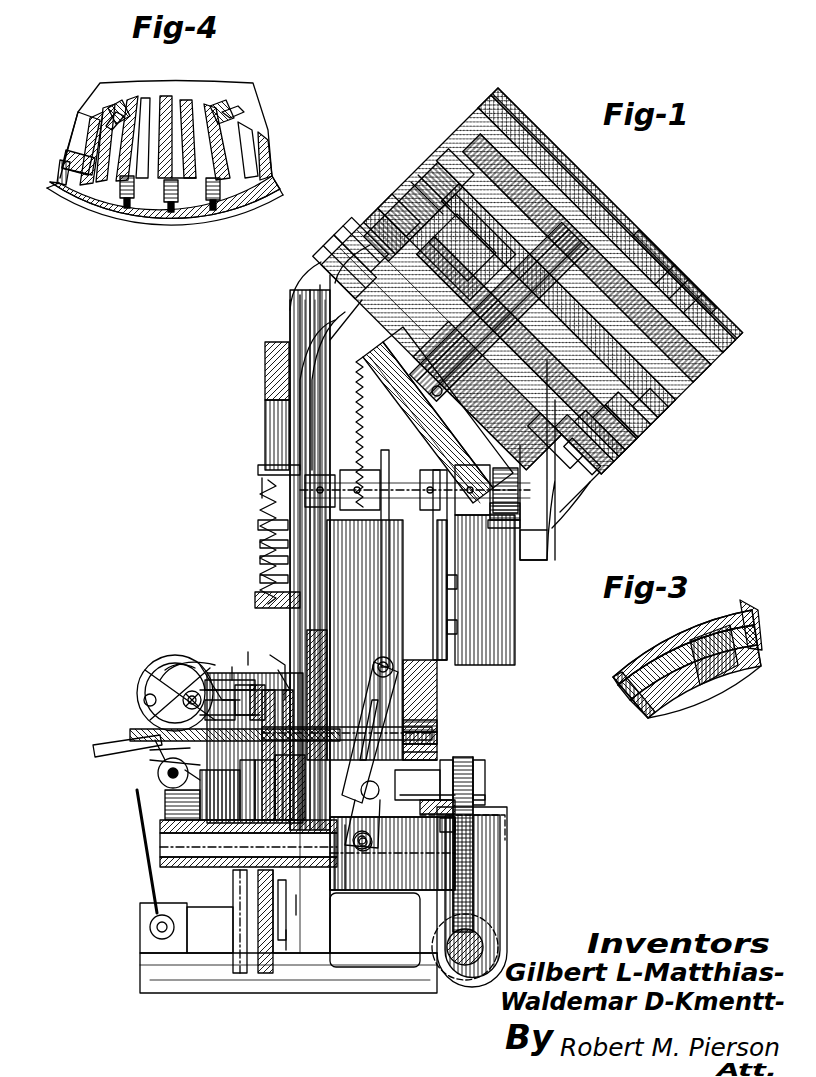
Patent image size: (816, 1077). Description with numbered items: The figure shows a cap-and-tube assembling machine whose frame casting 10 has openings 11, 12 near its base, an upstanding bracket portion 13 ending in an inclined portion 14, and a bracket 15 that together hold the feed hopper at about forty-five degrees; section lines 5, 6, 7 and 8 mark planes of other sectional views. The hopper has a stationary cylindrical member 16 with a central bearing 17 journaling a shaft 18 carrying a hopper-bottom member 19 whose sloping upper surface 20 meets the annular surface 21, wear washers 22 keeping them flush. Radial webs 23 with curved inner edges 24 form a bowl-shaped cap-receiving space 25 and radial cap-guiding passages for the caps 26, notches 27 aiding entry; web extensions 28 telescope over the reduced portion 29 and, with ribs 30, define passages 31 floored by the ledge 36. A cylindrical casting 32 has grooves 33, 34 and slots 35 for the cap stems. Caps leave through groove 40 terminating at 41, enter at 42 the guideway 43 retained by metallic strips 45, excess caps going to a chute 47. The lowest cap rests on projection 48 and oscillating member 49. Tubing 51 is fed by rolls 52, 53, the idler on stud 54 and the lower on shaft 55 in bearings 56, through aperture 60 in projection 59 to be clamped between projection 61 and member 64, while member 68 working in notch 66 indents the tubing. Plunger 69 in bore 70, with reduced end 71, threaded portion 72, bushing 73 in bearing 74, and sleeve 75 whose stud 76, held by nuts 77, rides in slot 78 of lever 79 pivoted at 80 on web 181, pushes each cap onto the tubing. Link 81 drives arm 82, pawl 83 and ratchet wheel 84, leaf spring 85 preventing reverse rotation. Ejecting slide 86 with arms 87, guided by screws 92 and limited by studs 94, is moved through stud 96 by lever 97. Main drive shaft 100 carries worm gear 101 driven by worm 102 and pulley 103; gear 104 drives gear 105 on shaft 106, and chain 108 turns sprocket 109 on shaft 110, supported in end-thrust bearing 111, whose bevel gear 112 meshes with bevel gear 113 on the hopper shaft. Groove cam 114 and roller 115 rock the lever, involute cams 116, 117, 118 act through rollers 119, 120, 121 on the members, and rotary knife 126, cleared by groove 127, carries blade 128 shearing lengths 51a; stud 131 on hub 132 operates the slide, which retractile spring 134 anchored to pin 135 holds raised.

In FIG. 1, the section line 5— 5 is at (238, 667).
In FIG. 1, the section line 6— 6 is at (254, 652).
In FIG. 1, the section line 7— 7 is at (286, 940).
In FIG. 1, the section line 8— 8 is at (296, 904).
In FIG. 1, the frame casting 10 is at (452, 660).
In FIG. 1, the opening 11 is at (297, 955).
In FIG. 1, the opening 12 is at (395, 950).
In FIG. 1, the upstanding bracket portion 13 is at (325, 417).
In FIG. 1, the inclined portion 14 is at (345, 292).
In FIG. 1, the bracket 15 is at (560, 505).
In FIG. 4, the lower stationary cylindrical member 16 is at (68, 125).
In FIG. 3, the lower stationary cylindrical member 16 is at (632, 670).
In FIG. 1, the lower stationary cylindrical member 16 is at (612, 440).
In FIG. 1, the central bearing 17 is at (565, 440).
In FIG. 1, the shaft 18 is at (558, 470).
In FIG. 1, the hopper-bottom member 19 is at (553, 160).
In FIG. 4, the upper surface 20 is at (86, 118).
In FIG. 1, the upper surface 20 is at (505, 195).
In FIG. 4, the upper annular surface 21 is at (60, 150).
In FIG. 1, the upper annular surface 21 is at (478, 178).
In FIG. 1, the wear washers 22 is at (470, 295).
In FIG. 4, the webs 23 is at (172, 212).
In FIG. 1, the webs 23 is at (692, 292).
In FIG. 4, the inner edges 24 is at (162, 115).
In FIG. 1, the inner edges 24 is at (642, 252).
In FIG. 4, the cap-receiving space 25 is at (178, 96).
In FIG. 1, the cap-receiving space 25 is at (608, 205).
In FIG. 4, the caps 26 is at (118, 105).
In FIG. 1, the caps 26 is at (690, 368).
In FIG. 4, the notches 27 is at (210, 110).
In FIG. 3, the web extensions 28 is at (692, 656).
In FIG. 1, the web extensions 28 is at (437, 180).
In FIG. 1, the reduced upper portion 29 is at (430, 195).
In FIG. 4, the ribs 30 is at (84, 198).
In FIG. 3, the ribs 30 is at (734, 614).
In FIG. 1, the ribs 30 is at (453, 170).
In FIG. 3, the passages 31 is at (716, 602).
In FIG. 1, the passages 31 is at (668, 402).
In FIG. 4, the hollow cylindrical casting 32 is at (112, 205).
In FIG. 3, the hollow cylindrical casting 32 is at (660, 690).
In FIG. 1, the hollow cylindrical casting 32 is at (692, 388).
In FIG. 4, the grooves 33 is at (236, 200).
In FIG. 1, the grooves 33 is at (702, 352).
In FIG. 1, the grooves 34 is at (385, 230).
In FIG. 3, the slots 35 is at (712, 655).
In FIG. 4, the shoulder or ledge 36 is at (57, 178).
In FIG. 3, the shoulder or ledge 36 is at (637, 690).
In FIG. 1, the shoulder or ledge 36 is at (640, 420).
In FIG. 1, the cap-guiding groove 40 is at (392, 205).
In FIG. 1, the terminus of groove 41 is at (350, 225).
In FIG. 1, the entrance 42 is at (340, 272).
In FIG. 1, the cap-feeding guideway 43 is at (322, 312).
In FIG. 1, the metallic strips 45 is at (318, 300).
In FIG. 1, the chute 47 is at (275, 355).
In FIG. 1, the cap-supporting projection 48 is at (195, 694).
In FIG. 1, the vertically oscillating member 49 is at (170, 767).
In FIG. 1, the tubing 51 is at (95, 750).
In FIG. 1, the lengths or sleeves 51a is at (210, 665).
In FIG. 1, the upper feed roll 52 is at (190, 680).
In FIG. 1, the lower feed roll 53 is at (175, 772).
In FIG. 1, the stud 54 is at (205, 685).
In FIG. 1, the shaft 55 is at (190, 780).
In FIG. 1, the bearings 56 is at (200, 792).
In FIG. 1, the projection 59 is at (187, 666).
In FIG. 1, the tube-guiding aperture 60 is at (180, 660).
In FIG. 1, the tube-clamping projection 61 is at (240, 690).
In FIG. 1, the tube-supporting member 64 is at (168, 752).
In FIG. 1, the notch 66 is at (150, 735).
In FIG. 1, the tube-clamping member 68 is at (160, 748).
In FIG. 1, the cap-advancing plunger 69 is at (430, 702).
In FIG. 1, the bore 70 is at (432, 712).
In FIG. 1, the reduced end 71 is at (430, 692).
In FIG. 1, the threaded portion 72 is at (440, 759).
In FIG. 1, the threaded bushing 73 is at (440, 747).
In FIG. 1, the bearing 74 is at (440, 729).
In FIG. 1, the sleeve 75 is at (470, 764).
In FIG. 1, the stud 76 is at (430, 737).
In FIG. 1, the nuts 77 is at (473, 782).
In FIG. 1, the slot 78 is at (425, 724).
In FIG. 1, the lever 79 is at (420, 714).
In FIG. 1, the pivot 80 is at (470, 794).
In FIG. 1, the link 81 is at (255, 690).
In FIG. 1, the pawl-operating arm 82 is at (205, 695).
In FIG. 1, the pawl 83 is at (210, 710).
In FIG. 1, the ratchet wheel 84 is at (200, 720).
In FIG. 1, the leaf spring 85 is at (260, 792).
In FIG. 1, the vertically reciprocating slide 86 is at (268, 562).
In FIG. 1, the arms 87 is at (270, 527).
In FIG. 1, the retaining and guiding screws 92 is at (268, 547).
In FIG. 1, the studs 94 is at (272, 512).
In FIG. 1, the central stud 96 is at (268, 596).
In FIG. 1, the lever 97 is at (268, 580).
In FIG. 1, the main drive shaft 100 is at (408, 900).
In FIG. 1, the worm gear 101 is at (490, 880).
In FIG. 1, the worm 102 is at (470, 945).
In FIG. 1, the belt pulley 103 is at (500, 957).
In FIG. 1, the gear 104 is at (350, 870).
In FIG. 1, the gear 105 is at (455, 825).
In FIG. 1, the shaft 106 is at (470, 815).
In FIG. 1, the sprocket chain 108 is at (460, 610).
In FIG. 1, the sprocket 109 is at (470, 540).
In FIG. 1, the shaft 110 is at (347, 485).
In FIG. 1, the end-thrust bearing 111 is at (520, 520).
In FIG. 1, the bevel gear 112 is at (500, 522).
In FIG. 1, the bevel gear 113 is at (383, 395).
In FIG. 1, the groove cam 114 is at (385, 870).
In FIG. 1, the roller 115 is at (472, 840).
In FIG. 1, the involute cam 116 is at (278, 835).
In FIG. 1, the involute cam 117 is at (287, 858).
In FIG. 1, the involute cam 118 is at (300, 838).
In FIG. 1, the roller 119 is at (272, 787).
In FIG. 1, the roller 120 is at (310, 828).
In FIG. 1, the roller 121 is at (300, 820).
In FIG. 1, the rotary knife structure 126 is at (263, 895).
In FIG. 1, the groove 127 is at (200, 667).
In FIG. 1, the blade 128 is at (262, 940).
In FIG. 1, the stud 131 is at (333, 805).
In FIG. 1, the hub 132 is at (293, 910).
In FIG. 1, the retractile spring 134 is at (266, 492).
In FIG. 1, the pin 135 is at (265, 470).
In FIG. 1, the web 181 is at (480, 800).